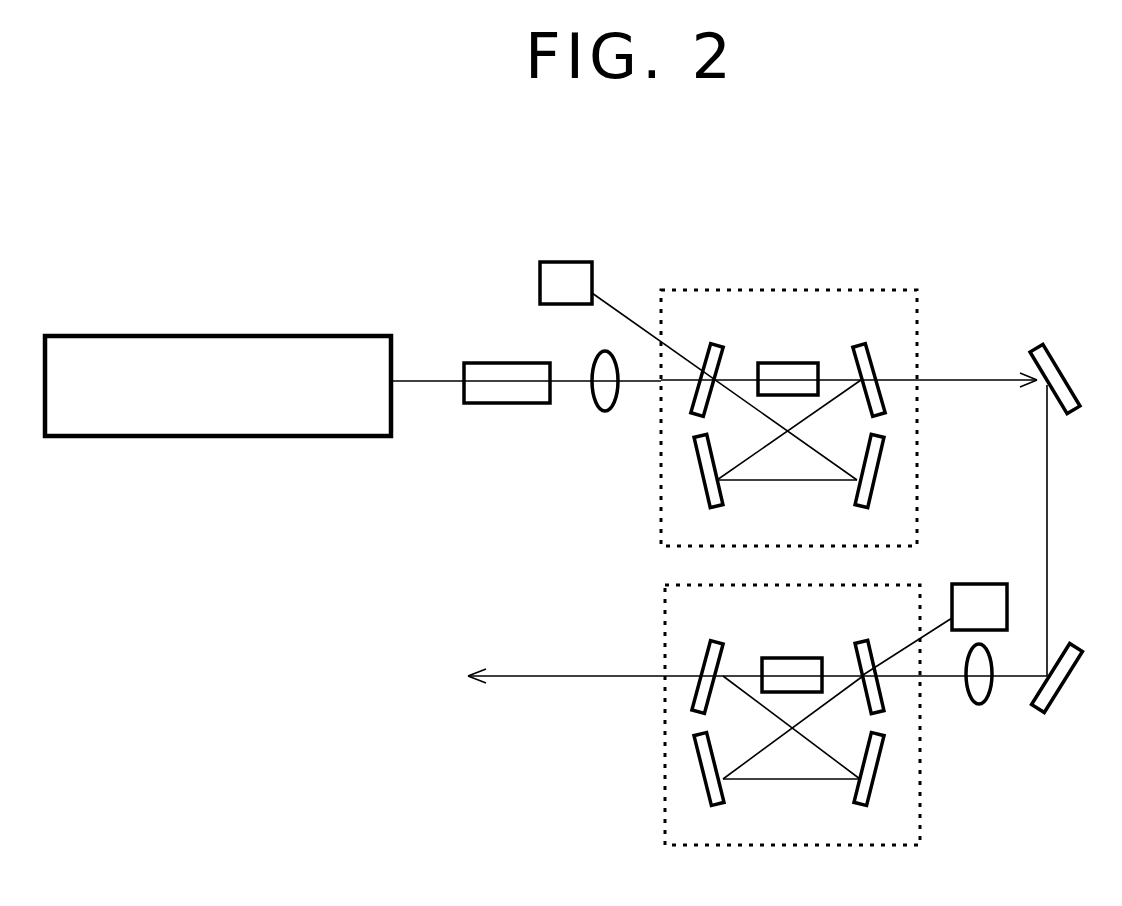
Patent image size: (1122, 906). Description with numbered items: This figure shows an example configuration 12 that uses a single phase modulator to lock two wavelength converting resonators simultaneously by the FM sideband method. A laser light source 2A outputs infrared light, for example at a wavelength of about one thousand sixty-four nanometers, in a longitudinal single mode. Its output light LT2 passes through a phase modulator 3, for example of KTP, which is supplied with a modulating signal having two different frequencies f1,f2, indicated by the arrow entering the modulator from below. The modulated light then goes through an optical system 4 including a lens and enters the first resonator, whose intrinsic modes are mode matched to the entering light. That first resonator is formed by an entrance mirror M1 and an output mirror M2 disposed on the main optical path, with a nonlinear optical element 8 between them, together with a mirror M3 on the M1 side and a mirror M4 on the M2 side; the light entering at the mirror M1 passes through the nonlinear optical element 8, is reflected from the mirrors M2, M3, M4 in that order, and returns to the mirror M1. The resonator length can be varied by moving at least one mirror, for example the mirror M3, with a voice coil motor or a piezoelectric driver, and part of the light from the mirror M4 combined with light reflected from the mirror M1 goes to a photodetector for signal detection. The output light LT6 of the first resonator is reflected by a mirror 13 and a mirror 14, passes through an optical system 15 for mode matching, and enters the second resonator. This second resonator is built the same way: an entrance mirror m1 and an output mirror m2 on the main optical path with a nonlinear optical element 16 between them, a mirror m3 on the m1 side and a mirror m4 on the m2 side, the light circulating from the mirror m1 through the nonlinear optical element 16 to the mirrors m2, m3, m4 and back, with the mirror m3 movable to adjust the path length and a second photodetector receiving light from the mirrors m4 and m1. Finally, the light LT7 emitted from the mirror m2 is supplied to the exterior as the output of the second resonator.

The laser light source 2A is at (200, 336).
The output light LT2 is at (428, 381).
The phase modulator 3 is at (499, 363).
The modulating signal frequencies f1,f2 is at (507, 404).
The optical system 4 is at (607, 411).
The nonlinear optical element 8 is at (791, 363).
The entrance mirror M1 is at (700, 365).
The output mirror M2 is at (882, 365).
The mirror M3 is at (694, 485).
The mirror M4 is at (885, 485).
The example configuration 12 is at (948, 232).
The output light of the first resonator LT6 is at (962, 380).
The mirror 13 is at (1061, 364).
The mirror 14 is at (1062, 690).
The optical system for mode matching 15 is at (981, 705).
The nonlinear optical element 16 is at (794, 658).
The entrance mirror m1 is at (887, 664).
The output mirror m2 is at (703, 663).
The mirror m3 is at (887, 783).
The mirror m4 is at (696, 783).
The output light of the second resonator LT7 is at (538, 676).